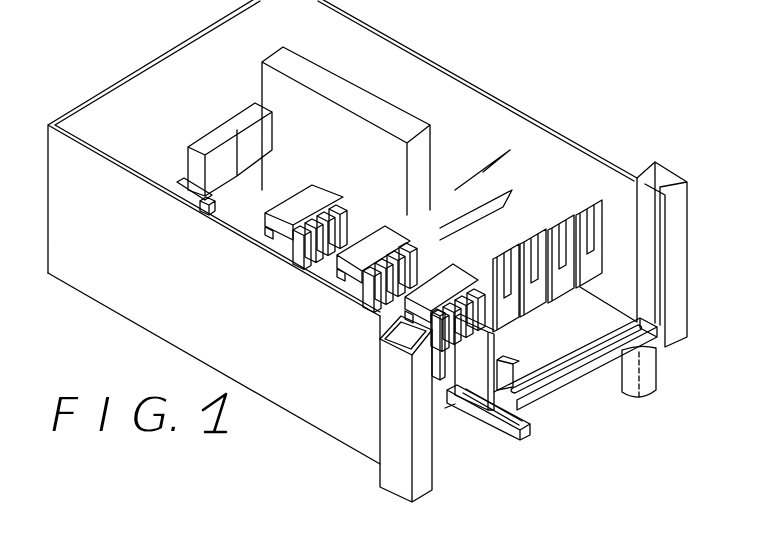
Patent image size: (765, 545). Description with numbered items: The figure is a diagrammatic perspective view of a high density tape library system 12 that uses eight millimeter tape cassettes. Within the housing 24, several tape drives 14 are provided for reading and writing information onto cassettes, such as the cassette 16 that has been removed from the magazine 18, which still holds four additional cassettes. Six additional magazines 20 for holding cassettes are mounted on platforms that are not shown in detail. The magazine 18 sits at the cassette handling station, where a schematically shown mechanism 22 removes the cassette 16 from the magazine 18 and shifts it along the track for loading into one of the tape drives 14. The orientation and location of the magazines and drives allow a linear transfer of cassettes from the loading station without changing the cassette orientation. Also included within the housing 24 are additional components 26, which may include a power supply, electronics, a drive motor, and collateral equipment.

The tape library system 12 is at (565, 105).
The tape drives 14 is at (575, 197).
The cassette 16 is at (478, 372).
The magazine 18 is at (432, 290).
The additional magazines 20 is at (182, 192).
The mechanism 22 is at (495, 358).
The housing 24 is at (226, 320).
The additional components 26 is at (256, 117).